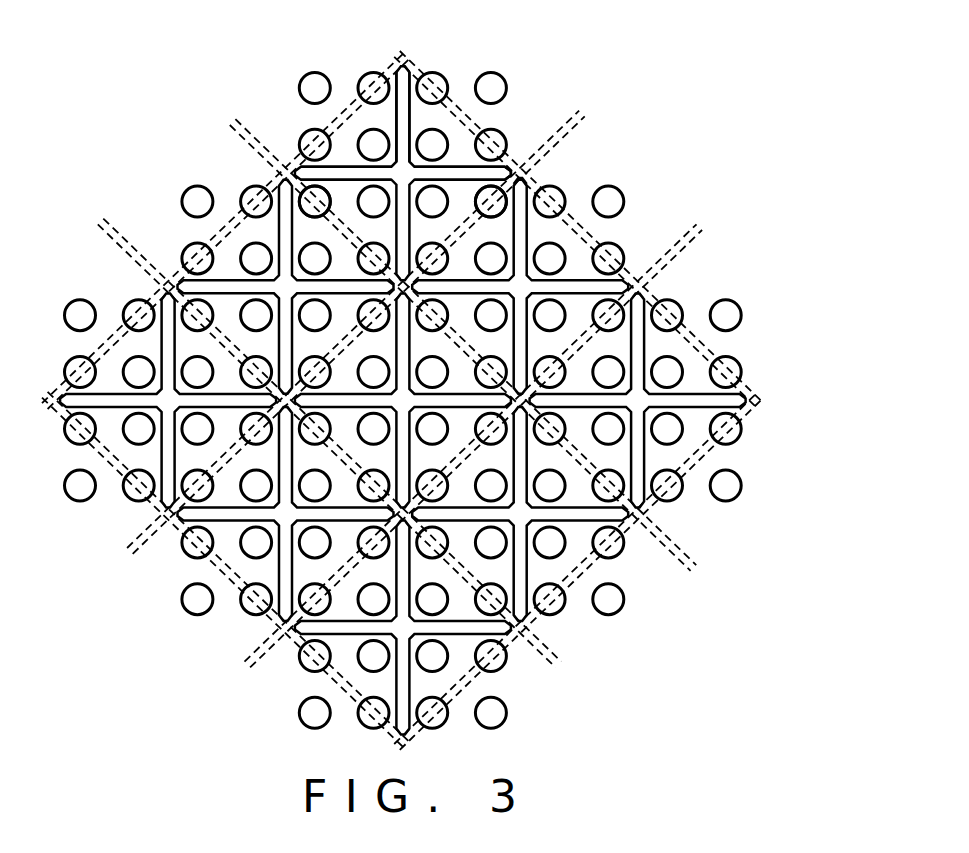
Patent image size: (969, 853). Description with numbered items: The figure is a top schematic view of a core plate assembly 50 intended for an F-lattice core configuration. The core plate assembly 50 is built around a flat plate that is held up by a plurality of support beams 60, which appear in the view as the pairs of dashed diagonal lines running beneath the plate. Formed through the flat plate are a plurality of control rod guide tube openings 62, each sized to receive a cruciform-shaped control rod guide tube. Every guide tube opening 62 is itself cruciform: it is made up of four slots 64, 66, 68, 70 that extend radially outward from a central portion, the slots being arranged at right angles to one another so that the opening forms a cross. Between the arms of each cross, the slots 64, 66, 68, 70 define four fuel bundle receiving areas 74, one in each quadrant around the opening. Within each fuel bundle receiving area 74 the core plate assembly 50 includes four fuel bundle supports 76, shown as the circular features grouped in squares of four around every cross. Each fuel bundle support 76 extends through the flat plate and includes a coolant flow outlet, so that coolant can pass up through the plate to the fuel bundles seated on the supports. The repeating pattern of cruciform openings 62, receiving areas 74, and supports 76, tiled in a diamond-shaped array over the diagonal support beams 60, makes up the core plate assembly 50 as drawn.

The core plate assembly 50 is at (652, 68).
The support beams 60 is at (703, 222).
The control rod guide tube openings 62 is at (408, 172).
The slot 64 is at (453, 167).
The slot 66 is at (522, 168).
The slot 68 is at (343, 167).
The slot 70 is at (413, 125).
The fuel bundle receiving areas 74 is at (323, 239).
The fuel bundle supports 76 is at (434, 73).